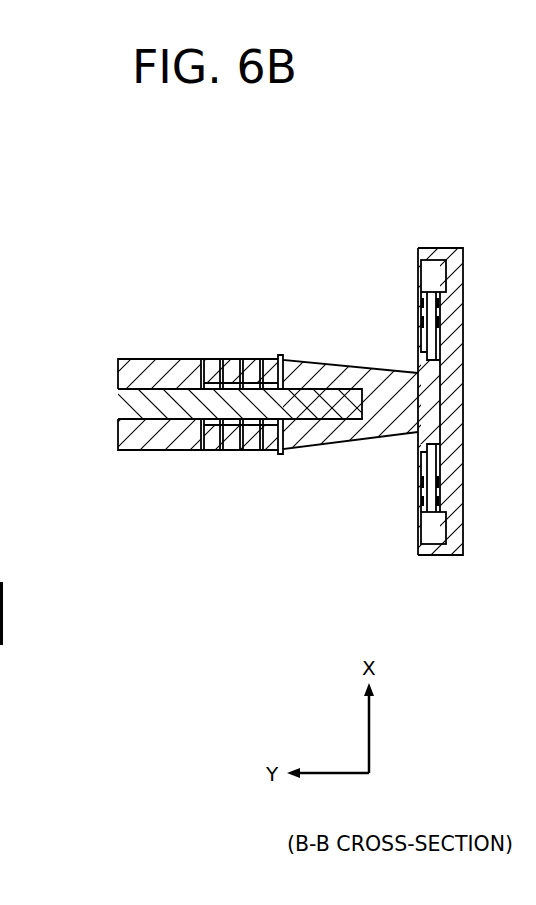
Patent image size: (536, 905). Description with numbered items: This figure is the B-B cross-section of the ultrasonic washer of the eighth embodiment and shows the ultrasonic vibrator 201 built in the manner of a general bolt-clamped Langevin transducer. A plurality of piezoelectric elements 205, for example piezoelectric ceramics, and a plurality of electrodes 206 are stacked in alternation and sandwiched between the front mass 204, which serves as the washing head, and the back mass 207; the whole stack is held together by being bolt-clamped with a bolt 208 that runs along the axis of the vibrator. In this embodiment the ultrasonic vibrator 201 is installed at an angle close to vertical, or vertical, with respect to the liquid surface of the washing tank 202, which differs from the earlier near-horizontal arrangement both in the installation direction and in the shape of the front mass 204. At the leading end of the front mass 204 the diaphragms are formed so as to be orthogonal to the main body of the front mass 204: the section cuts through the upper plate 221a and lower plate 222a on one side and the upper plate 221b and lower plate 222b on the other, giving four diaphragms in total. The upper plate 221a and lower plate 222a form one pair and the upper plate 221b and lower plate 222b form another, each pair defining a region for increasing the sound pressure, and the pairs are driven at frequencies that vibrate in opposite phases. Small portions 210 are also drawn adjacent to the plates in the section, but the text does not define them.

The ultrasonic vibrator 201 is at (133, 358).
The washing tank 202 is at (429, 268).
The front mass 204 is at (303, 437).
The piezoelectric element 205 is at (212, 370).
The electrode 206 is at (200, 443).
The back mass 207 is at (147, 443).
The bolt 208 is at (123, 403).
The contact portion 210 is at (419, 318).
The upper plate 221a is at (419, 298).
The upper plate 221b is at (417, 512).
The lower plate 222a is at (459, 270).
The lower plate 222b is at (450, 532).